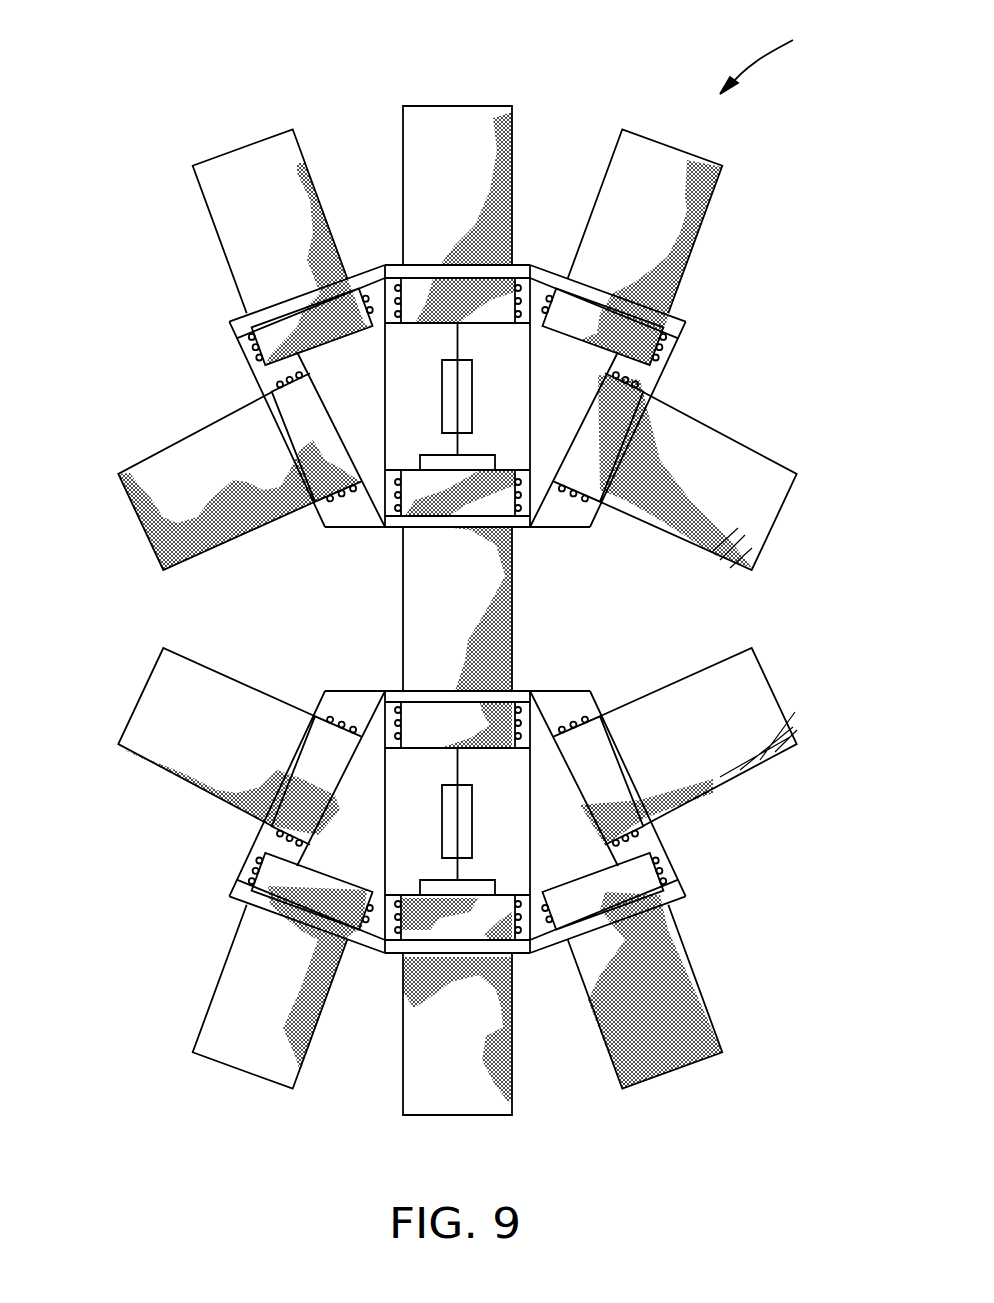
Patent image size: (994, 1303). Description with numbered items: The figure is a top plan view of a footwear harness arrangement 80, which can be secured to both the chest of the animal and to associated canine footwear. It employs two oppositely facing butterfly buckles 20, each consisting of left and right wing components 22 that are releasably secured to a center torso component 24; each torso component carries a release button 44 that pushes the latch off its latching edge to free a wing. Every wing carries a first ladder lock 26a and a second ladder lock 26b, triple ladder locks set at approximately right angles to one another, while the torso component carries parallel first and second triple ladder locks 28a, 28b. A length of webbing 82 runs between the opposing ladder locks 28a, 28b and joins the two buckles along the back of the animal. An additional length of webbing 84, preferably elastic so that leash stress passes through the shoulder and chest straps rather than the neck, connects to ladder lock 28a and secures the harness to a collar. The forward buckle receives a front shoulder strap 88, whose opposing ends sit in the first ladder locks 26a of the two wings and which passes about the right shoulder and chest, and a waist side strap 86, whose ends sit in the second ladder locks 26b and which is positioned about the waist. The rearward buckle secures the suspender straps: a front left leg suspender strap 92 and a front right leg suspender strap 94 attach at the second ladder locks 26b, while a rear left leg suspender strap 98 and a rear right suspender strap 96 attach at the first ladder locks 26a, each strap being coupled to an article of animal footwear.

The butterfly buckle 20 is at (237, 318).
The wing component 22 is at (313, 505).
The center torso component 24 is at (516, 520).
The first ladder lock 26a is at (553, 288).
The second ladder lock 26b is at (640, 398).
The first ladder lock 28a is at (385, 265).
The second ladder lock 28b is at (385, 525).
The release button 44 is at (466, 380).
The footwear harness arrangement 80 is at (794, 31).
The webbing 82 is at (410, 648).
The webbing 84 is at (462, 107).
The waist side strap 86 is at (148, 478).
The front shoulder strap 88 is at (256, 150).
The front left leg suspender strap 92 is at (133, 695).
The front right leg suspender strap 94 is at (766, 688).
The rear right suspender strap 96 is at (655, 1082).
The rear left leg suspender strap 98 is at (214, 1050).